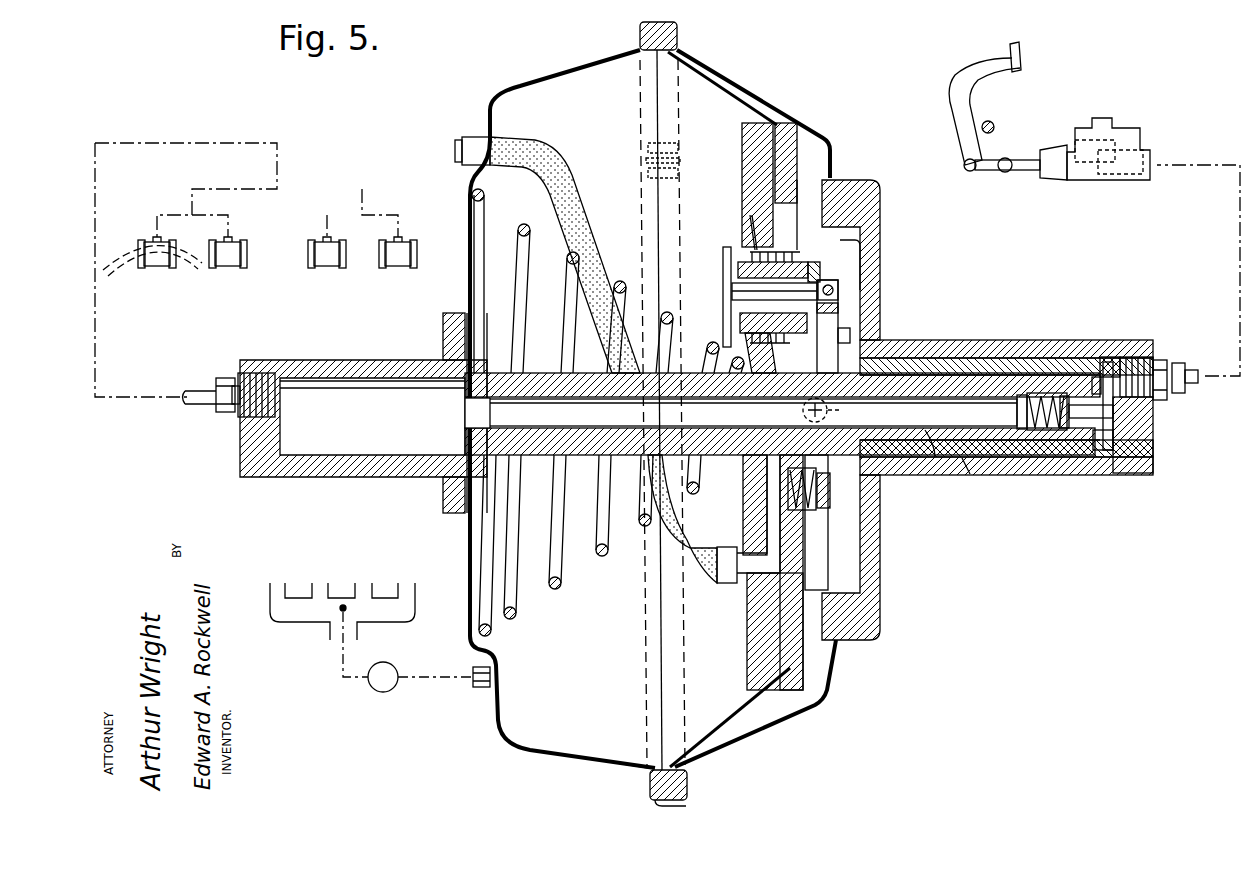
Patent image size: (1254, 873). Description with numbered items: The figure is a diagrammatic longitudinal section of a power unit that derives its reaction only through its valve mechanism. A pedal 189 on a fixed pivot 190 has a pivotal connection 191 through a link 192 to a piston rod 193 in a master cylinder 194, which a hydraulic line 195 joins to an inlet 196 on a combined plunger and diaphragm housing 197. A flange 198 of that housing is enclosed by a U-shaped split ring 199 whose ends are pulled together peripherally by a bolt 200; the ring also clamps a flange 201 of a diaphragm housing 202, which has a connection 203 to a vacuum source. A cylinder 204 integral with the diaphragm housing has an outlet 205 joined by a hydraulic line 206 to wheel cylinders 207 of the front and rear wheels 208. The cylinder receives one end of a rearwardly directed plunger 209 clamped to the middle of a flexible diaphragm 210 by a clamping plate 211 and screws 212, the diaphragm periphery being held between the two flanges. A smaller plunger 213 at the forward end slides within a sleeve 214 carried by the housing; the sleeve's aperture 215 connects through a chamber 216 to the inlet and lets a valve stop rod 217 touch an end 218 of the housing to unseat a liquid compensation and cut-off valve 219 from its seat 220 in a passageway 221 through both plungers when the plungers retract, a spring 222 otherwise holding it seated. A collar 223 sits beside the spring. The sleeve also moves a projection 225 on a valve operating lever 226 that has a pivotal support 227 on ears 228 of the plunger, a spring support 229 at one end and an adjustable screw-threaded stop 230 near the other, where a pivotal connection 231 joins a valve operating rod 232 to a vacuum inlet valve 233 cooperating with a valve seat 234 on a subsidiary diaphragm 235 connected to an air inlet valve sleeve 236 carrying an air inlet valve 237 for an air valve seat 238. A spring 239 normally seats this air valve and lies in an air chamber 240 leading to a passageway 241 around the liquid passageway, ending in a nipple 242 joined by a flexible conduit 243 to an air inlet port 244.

The pedal 189 is at (1020, 50).
The fixed pivot 190 is at (992, 126).
The pivotal connection 191 is at (965, 162).
The link 192 is at (990, 172).
The piston rod 193 is at (1027, 172).
The master cylinder 194 is at (1128, 128).
The hydraulic line 195 is at (1208, 168).
The inlet 196 is at (1148, 357).
The combined plunger and diaphragm housing 197 is at (958, 338).
The flange 198 is at (690, 785).
The U-shaped split ring 199 is at (655, 803).
The bolt 200 is at (648, 145).
The flange 201 is at (650, 776).
The diaphragm housing 202 is at (470, 553).
The connection 203 is at (478, 688).
The cylinder 204 is at (372, 473).
The outlet 205 is at (318, 412).
The hydraulic line 206 is at (203, 143).
The wheel cylinders 207 is at (158, 268).
The front and rear wheels 208 is at (112, 248).
The rearwardly directed plunger 209 is at (550, 372).
The flexible diaphragm 210 is at (748, 735).
The clamping plate 211 is at (815, 605).
The screws 212 is at (806, 183).
The smaller plunger 213 is at (931, 467).
The sleeve 214 is at (959, 495).
The aperture 215 is at (1098, 376).
The chamber 216 is at (1110, 440).
The valve stop rod 217 is at (1085, 360).
The end 218 is at (1140, 424).
The liquid compensation and cut-off valve 219 is at (1062, 432).
The seat 220 is at (1075, 430).
The passageway 221 is at (743, 412).
The spring 222 is at (1042, 392).
The collar 223 is at (1022, 440).
The projection 225 is at (838, 478).
The valve operating lever 226 is at (840, 315).
The pivotal support 227 is at (860, 410).
The ears 228 is at (803, 411).
The spring support 229 is at (828, 515).
The adjustable screw-threaded stop 230 is at (850, 336).
The pivotal connection 231 is at (838, 288).
The valve operating rod 232 is at (818, 276).
The vacuum inlet valve 233 is at (723, 283).
The valve seat 234 is at (740, 250).
The subsidiary diaphragm 235 is at (735, 352).
The air inlet valve sleeve 236 is at (774, 292).
The air inlet valve 237 is at (845, 257).
The air valve seat 238 is at (797, 215).
The spring 239 is at (765, 258).
The air chamber 240 is at (790, 335).
The passageway 241 is at (760, 380).
The nipple 242 is at (740, 545).
The flexible conduit 243 is at (582, 248).
The air inlet port 244 is at (470, 153).